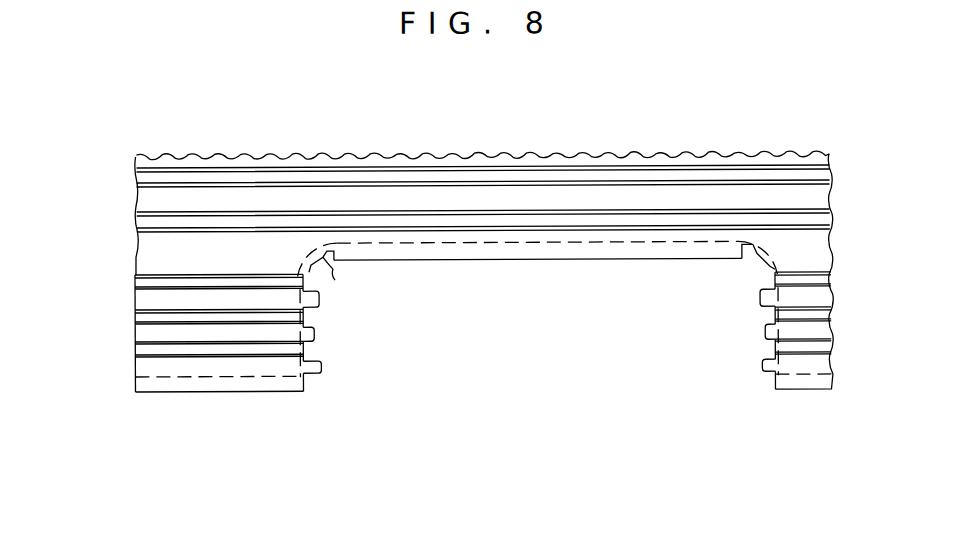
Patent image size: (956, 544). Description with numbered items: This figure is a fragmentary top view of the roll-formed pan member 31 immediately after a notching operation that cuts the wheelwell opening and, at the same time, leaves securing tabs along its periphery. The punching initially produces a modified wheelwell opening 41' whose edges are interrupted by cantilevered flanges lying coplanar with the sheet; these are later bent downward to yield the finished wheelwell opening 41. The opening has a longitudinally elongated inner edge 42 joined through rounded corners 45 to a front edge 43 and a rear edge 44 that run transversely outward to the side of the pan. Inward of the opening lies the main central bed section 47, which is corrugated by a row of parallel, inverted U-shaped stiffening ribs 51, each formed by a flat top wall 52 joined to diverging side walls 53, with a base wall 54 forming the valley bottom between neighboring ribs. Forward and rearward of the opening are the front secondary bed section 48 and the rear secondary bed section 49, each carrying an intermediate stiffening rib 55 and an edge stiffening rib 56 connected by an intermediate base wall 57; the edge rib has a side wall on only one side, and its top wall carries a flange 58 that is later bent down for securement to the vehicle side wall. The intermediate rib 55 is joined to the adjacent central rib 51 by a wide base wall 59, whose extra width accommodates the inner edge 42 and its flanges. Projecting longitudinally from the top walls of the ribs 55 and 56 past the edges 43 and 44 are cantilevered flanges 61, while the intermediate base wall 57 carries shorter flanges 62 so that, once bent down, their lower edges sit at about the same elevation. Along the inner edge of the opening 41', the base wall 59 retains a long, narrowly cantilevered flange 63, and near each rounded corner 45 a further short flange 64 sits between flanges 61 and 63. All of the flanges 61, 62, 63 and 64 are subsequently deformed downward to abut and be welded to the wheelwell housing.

The pan member 31 is at (392, 150).
The wheelwell opening 41 is at (701, 373).
The modified wheelwell opening 41' is at (307, 381).
The inner edge 42 is at (457, 245).
The front edge 43 is at (316, 312).
The rear edge 44 is at (764, 333).
The rounded corner 45 is at (745, 262).
The main central bed section 47 is at (502, 180).
The front secondary bed section 48 is at (145, 333).
The rear secondary bed section 49 is at (828, 330).
The stiffening rib 51 is at (269, 205).
The top wall 52 is at (148, 200).
The side wall 53 is at (212, 188).
The base wall 54 is at (148, 166).
The intermediate stiffening rib 55 is at (168, 302).
The edge stiffening rib 56 is at (235, 367).
The intermediate base wall 57 is at (203, 333).
The securing flange 58 is at (178, 387).
The base wall 59 is at (222, 268).
The cantilevered flange 61 is at (319, 300).
The flange 62 is at (314, 336).
The flange 63 is at (537, 258).
The flange 64 is at (331, 277).